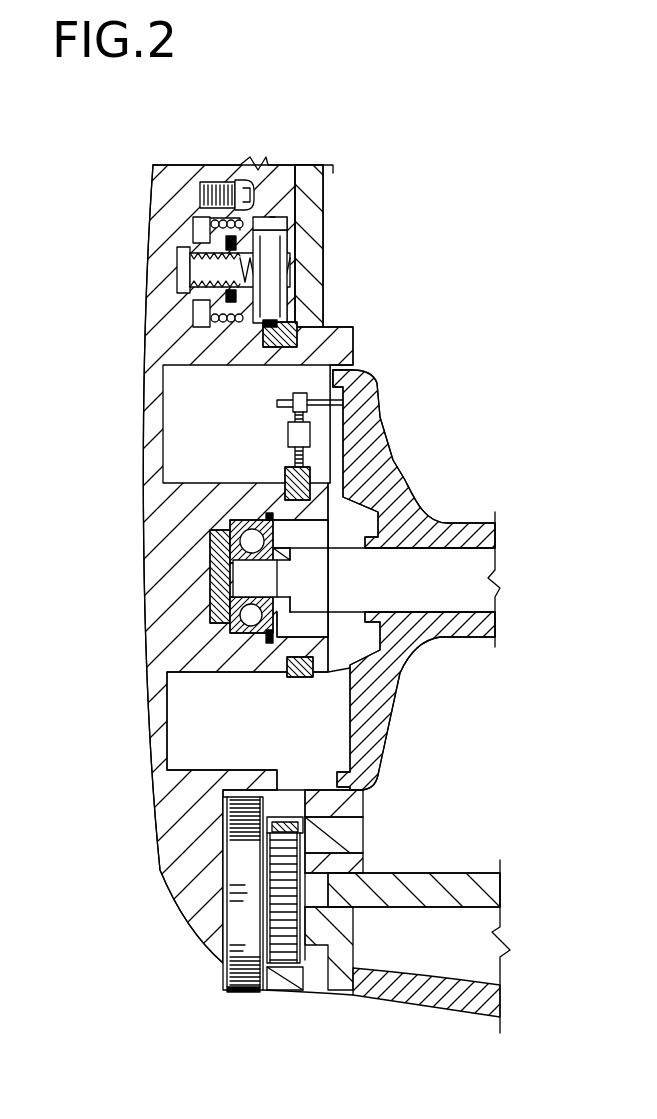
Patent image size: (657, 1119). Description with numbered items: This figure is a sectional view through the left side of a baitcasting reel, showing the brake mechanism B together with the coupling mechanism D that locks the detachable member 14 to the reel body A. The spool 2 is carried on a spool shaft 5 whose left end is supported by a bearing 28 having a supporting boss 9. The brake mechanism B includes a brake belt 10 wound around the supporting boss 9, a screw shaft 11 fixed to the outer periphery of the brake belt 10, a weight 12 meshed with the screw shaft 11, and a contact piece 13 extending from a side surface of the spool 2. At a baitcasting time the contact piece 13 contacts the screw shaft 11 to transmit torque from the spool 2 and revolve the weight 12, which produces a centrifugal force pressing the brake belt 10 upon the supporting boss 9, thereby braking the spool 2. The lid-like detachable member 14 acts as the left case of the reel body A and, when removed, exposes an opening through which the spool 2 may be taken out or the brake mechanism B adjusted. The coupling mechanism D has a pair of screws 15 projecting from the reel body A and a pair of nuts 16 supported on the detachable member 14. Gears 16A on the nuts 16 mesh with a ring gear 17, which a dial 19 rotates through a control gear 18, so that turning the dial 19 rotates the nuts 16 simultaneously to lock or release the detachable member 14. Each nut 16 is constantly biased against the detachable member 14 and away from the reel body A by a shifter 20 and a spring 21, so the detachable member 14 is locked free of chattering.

The spool 2 is at (468, 523).
The spool shaft 5 is at (483, 597).
The supporting boss 9 is at (268, 673).
The brake belt 10 is at (300, 678).
The screw shaft 11 is at (287, 461).
The weight 12 is at (288, 432).
The contact piece 13 is at (277, 402).
The detachable member 14 is at (145, 600).
The screws 15 is at (283, 277).
The nuts 16 is at (283, 241).
The gears 16A is at (263, 216).
The ring gear 17 is at (297, 329).
The control gear 18 is at (287, 953).
The dial 19 is at (240, 990).
The shifter 20 is at (193, 227).
The spring 21 is at (200, 197).
The bearing 28 is at (262, 627).
The reel body A is at (327, 213).
The brake mechanism B is at (263, 447).
The coupling mechanism D is at (281, 208).